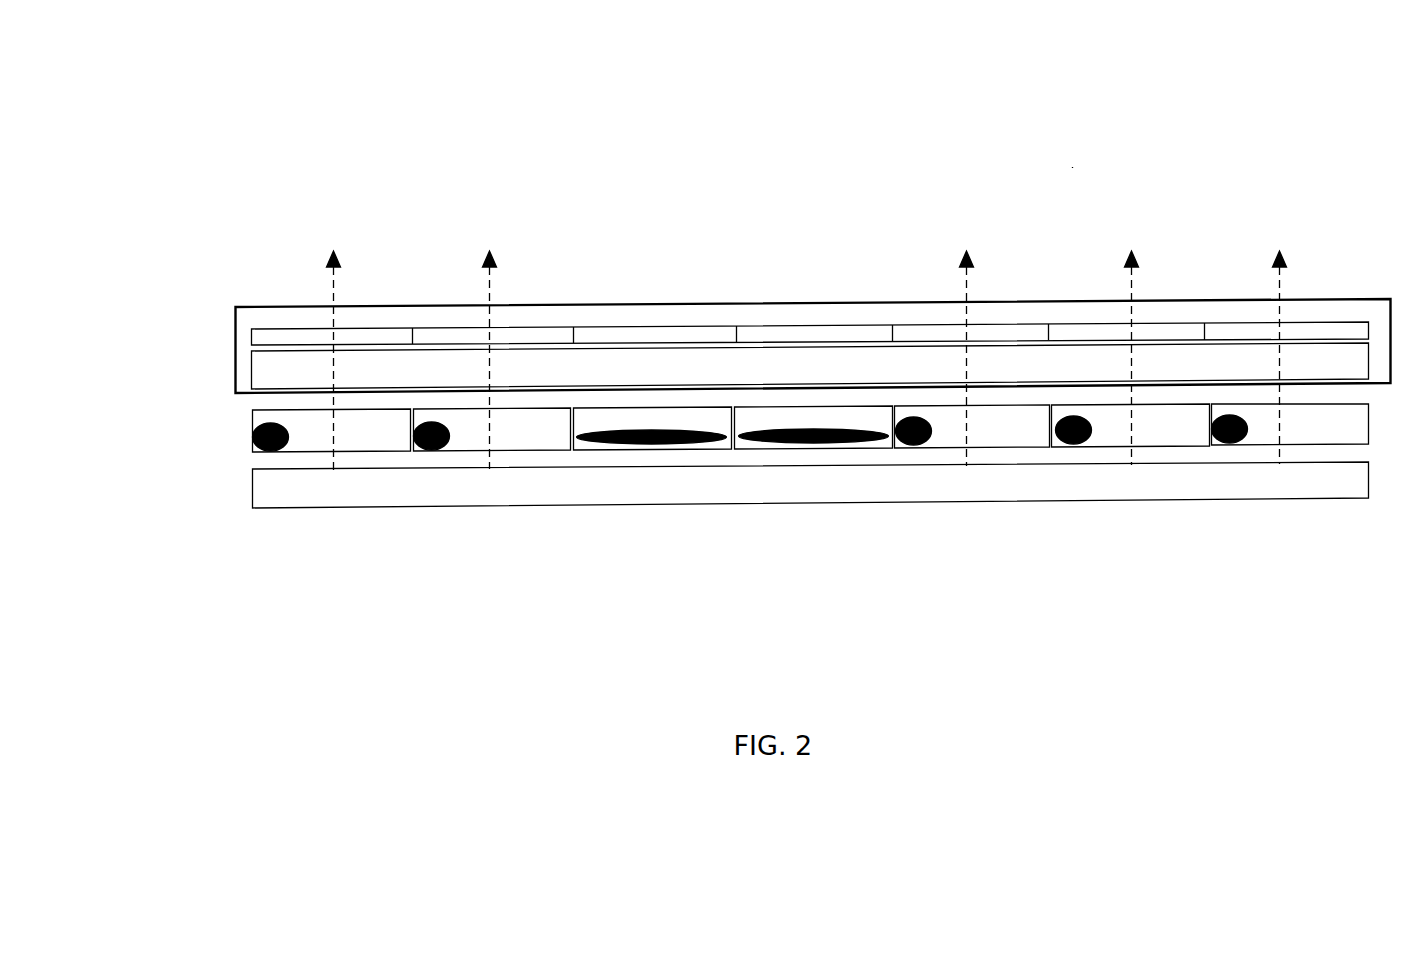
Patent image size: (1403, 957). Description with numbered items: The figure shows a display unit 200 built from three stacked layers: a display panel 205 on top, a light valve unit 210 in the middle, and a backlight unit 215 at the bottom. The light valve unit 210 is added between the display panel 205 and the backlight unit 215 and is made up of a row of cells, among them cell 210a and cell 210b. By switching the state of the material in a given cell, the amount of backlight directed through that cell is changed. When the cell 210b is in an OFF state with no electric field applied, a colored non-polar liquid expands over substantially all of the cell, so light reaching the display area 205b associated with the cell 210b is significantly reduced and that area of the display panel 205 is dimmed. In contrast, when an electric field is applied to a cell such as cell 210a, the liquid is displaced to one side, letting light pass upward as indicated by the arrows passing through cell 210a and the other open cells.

The display unit 200 is at (1072, 168).
The display panel 205 is at (233, 362).
The display area 205b is at (643, 327).
The light valve unit 210 is at (252, 427).
The cell 210a is at (475, 449).
The cell 210b is at (638, 449).
The backlight unit 215 is at (252, 494).